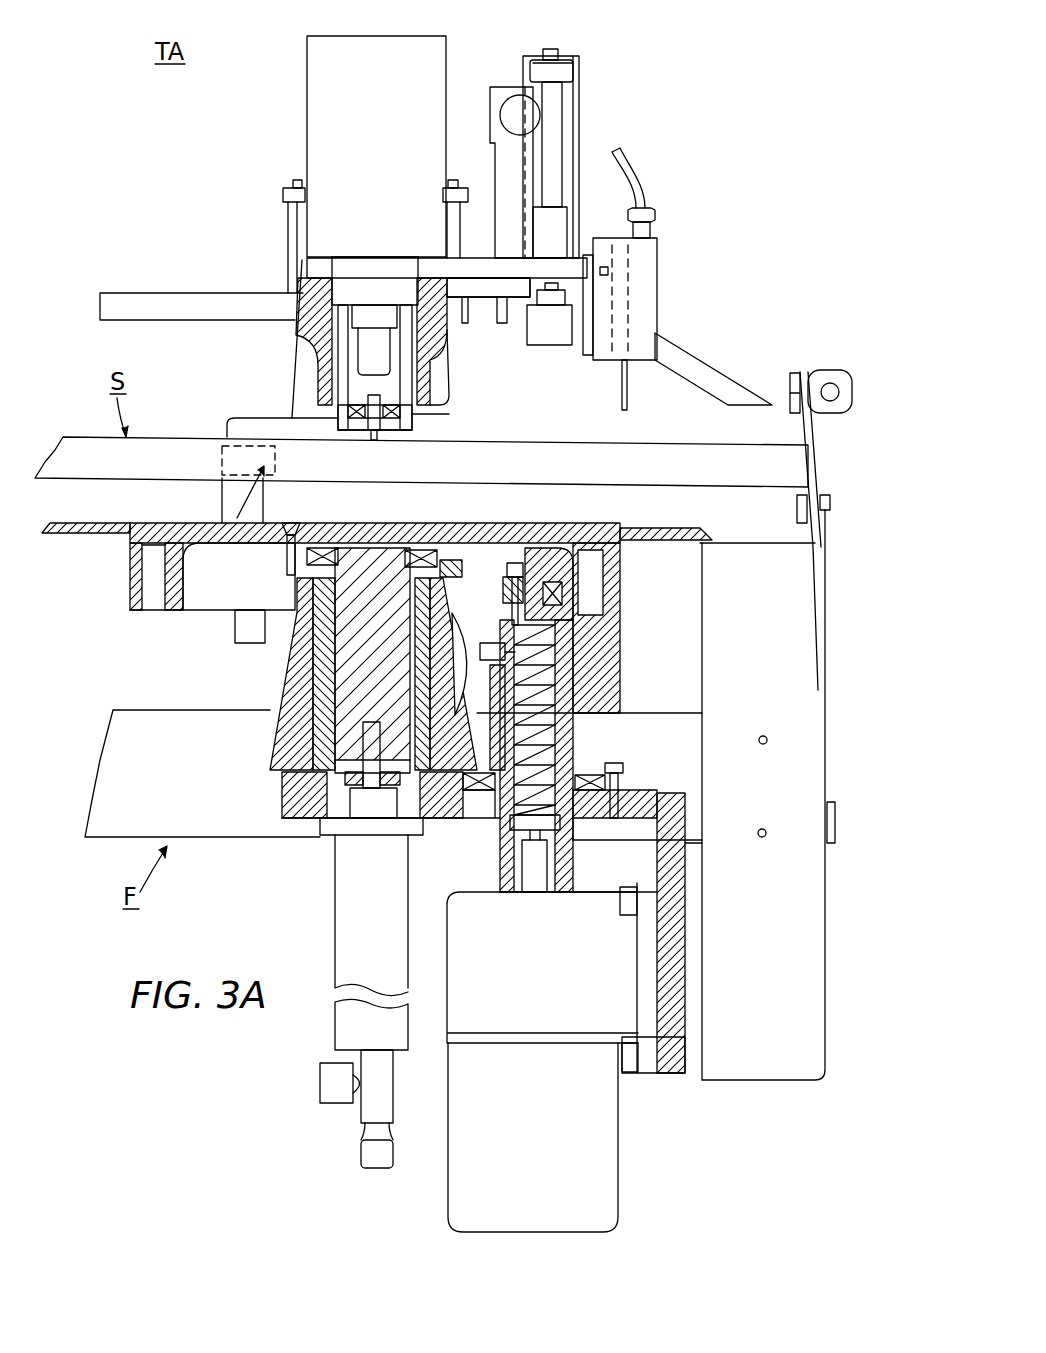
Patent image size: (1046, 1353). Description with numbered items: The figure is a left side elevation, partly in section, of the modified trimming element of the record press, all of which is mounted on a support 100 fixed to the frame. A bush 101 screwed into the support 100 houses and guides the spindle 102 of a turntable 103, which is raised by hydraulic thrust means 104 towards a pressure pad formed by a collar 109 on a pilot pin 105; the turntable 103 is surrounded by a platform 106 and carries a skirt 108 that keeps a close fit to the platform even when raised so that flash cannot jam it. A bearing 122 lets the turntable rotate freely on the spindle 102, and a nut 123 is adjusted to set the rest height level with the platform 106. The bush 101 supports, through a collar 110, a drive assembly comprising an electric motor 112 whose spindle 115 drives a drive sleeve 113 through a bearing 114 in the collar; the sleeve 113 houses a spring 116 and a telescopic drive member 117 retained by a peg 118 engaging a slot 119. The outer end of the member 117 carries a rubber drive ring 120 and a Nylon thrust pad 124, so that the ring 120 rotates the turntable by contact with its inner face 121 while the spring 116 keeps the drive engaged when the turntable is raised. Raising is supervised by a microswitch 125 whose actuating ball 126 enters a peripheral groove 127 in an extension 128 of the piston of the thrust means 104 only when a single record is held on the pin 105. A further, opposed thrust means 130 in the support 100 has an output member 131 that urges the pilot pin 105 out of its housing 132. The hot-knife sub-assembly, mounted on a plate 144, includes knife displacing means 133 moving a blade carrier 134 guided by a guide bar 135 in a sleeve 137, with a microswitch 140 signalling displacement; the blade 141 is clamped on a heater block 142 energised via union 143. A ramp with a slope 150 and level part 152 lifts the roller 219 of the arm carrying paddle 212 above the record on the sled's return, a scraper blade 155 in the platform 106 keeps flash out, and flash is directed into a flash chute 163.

The support 100 is at (312, 318).
The bush 101 is at (290, 800).
The spindle 102 is at (355, 690).
The turntable 103 is at (153, 605).
The thrust means 104 is at (345, 935).
The pilot pin 105 is at (380, 438).
The platform 106 is at (96, 540).
The skirt 108 is at (620, 598).
The collar 109 is at (360, 440).
The collar 110 is at (602, 820).
The electric motor 112 is at (618, 1130).
The drive sleeve 113 is at (576, 746).
The bearing 114 is at (616, 766).
The spindle 115 is at (536, 885).
The spring 116 is at (562, 662).
The telescopic drive member 117 is at (580, 620).
The peg 118 is at (496, 644).
The slot 119 is at (498, 690).
The rubber drive ring 120 is at (503, 596).
The inner face 121 is at (185, 590).
The bearing 122 is at (292, 577).
The nut 123 is at (352, 782).
The thrust pad 124 is at (515, 545).
The microswitch 125 is at (320, 1080).
The actuating ball 126 is at (360, 1090).
The peripheral groove 127 is at (394, 1142).
The extension 128 is at (393, 1095).
The thrust means 130 is at (307, 103).
The output member 131 is at (392, 357).
The housing 132 is at (412, 418).
The knife displacing means 133 is at (580, 112).
The knife blade carrier 134 is at (548, 343).
The guide bar 135 is at (556, 50).
The sleeve 137 is at (577, 222).
The microswitch 140 is at (522, 98).
The blade 141 is at (620, 395).
The blade heater block 142 is at (660, 310).
The union 143 is at (655, 212).
The plate 144 is at (502, 292).
The slope 150 is at (700, 360).
The level part 152 is at (183, 293).
The scraper blade 155 is at (266, 503).
The flash chute 163 is at (770, 1082).
The paddle 212 is at (815, 545).
The roller 219 is at (815, 372).